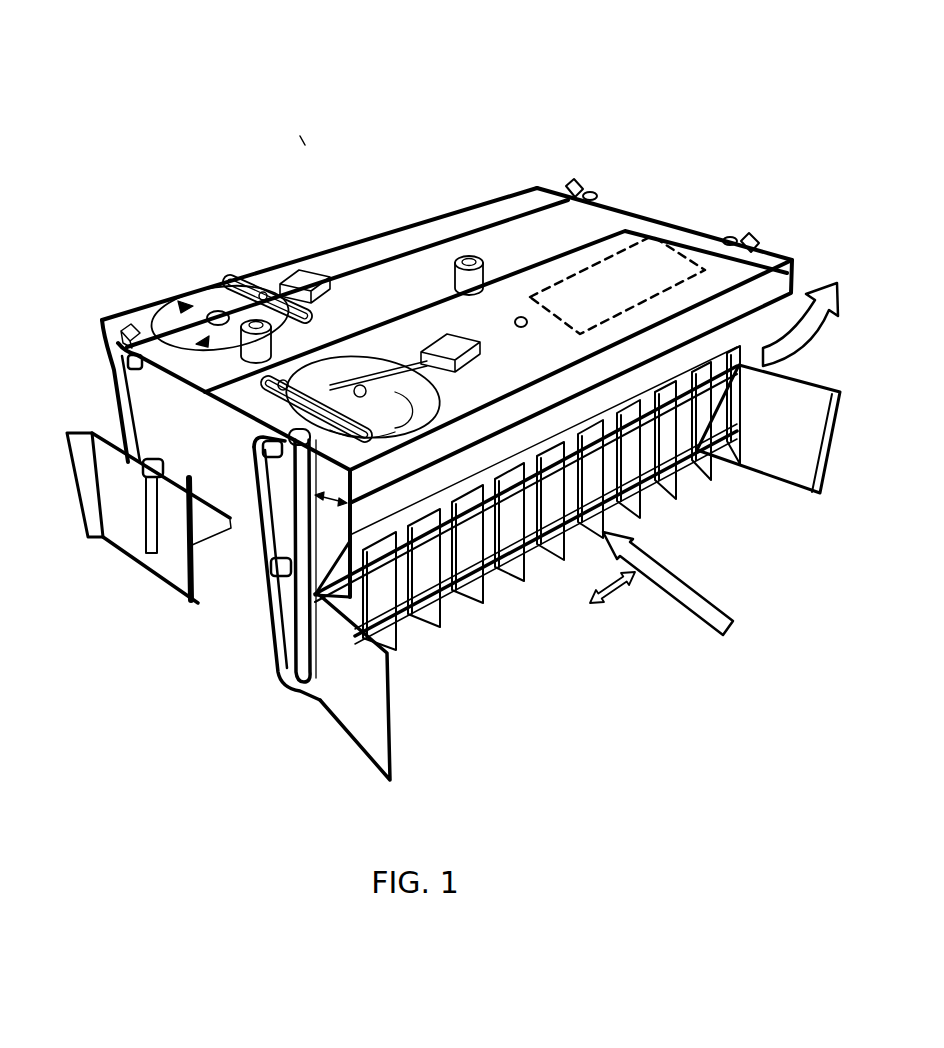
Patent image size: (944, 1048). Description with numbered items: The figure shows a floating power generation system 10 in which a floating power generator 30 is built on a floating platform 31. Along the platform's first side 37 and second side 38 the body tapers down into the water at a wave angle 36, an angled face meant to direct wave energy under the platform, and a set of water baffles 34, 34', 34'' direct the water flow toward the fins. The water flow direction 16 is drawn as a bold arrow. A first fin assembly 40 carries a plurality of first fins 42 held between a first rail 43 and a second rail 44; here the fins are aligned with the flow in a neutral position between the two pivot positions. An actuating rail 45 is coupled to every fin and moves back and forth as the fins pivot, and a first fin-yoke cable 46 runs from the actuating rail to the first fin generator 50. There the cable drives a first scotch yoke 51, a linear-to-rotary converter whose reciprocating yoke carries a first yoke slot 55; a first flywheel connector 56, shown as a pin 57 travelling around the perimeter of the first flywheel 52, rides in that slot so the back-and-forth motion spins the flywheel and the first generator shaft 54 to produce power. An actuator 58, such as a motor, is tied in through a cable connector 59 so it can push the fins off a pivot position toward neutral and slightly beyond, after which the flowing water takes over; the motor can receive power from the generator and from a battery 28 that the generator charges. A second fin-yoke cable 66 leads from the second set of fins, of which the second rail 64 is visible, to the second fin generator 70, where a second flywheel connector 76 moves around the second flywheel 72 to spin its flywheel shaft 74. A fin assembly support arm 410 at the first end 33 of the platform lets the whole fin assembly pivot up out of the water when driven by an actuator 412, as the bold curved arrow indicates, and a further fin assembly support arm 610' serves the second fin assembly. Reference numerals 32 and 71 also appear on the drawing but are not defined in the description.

The floating power generation system 10 is at (305, 145).
The water flow direction 16 is at (700, 613).
The battery 28 is at (620, 263).
The floating power generator 30 is at (125, 372).
The floating platform 31 is at (530, 203).
The top panel inner edge 32 is at (610, 227).
The first end 33 is at (215, 500).
The water baffle 34 is at (413, 696).
The water baffle 34' is at (768, 436).
The water baffle 34'' is at (83, 529).
The wave angle 36 is at (345, 506).
The first side 37 is at (717, 340).
The second side 38 is at (345, 237).
The first fin assembly 40 is at (638, 502).
The first fins 42 is at (562, 547).
The first rail 43 is at (517, 493).
The second rail 44 is at (430, 630).
The actuating rail 45 is at (480, 597).
The first fin-yoke cable 46 is at (707, 267).
The first fin generator 50 is at (270, 384).
The first scotch yoke 51 is at (353, 358).
The first flywheel 52 is at (405, 365).
The first generator shaft 54 is at (435, 362).
The first yoke slot 55 is at (380, 440).
The first flywheel connector 56 is at (395, 408).
The pin 57 is at (262, 425).
The actuator 58 is at (245, 356).
The cable connector 59 is at (297, 280).
The second rail 64 is at (212, 542).
The second fin-yoke cable 66 is at (482, 203).
The second fin generator 70 is at (190, 308).
The central hole 71 is at (207, 312).
The second flywheel 72 is at (200, 285).
The flywheel shaft 74 is at (225, 305).
The second flywheel connector 76 is at (263, 292).
The fin assembly support arm 410 is at (293, 603).
The actuator 412 is at (256, 455).
The hinge post 610' is at (115, 560).